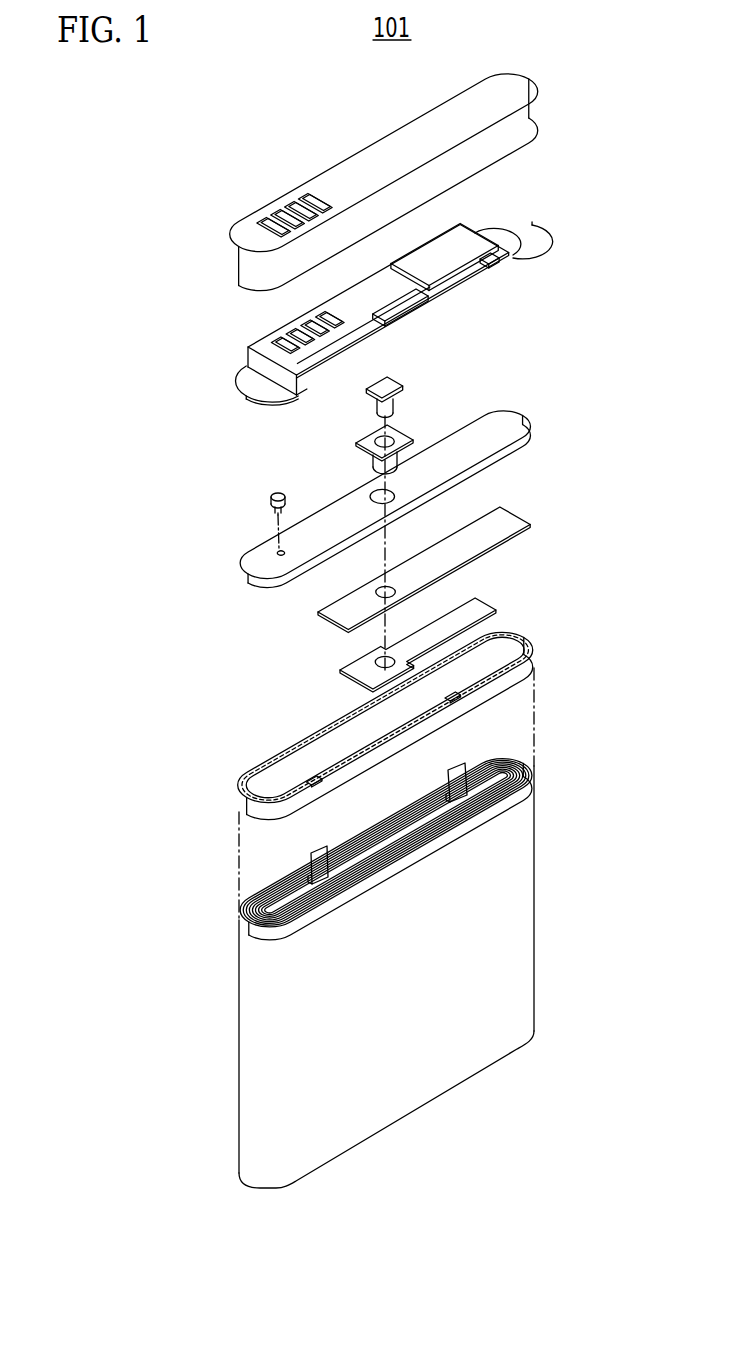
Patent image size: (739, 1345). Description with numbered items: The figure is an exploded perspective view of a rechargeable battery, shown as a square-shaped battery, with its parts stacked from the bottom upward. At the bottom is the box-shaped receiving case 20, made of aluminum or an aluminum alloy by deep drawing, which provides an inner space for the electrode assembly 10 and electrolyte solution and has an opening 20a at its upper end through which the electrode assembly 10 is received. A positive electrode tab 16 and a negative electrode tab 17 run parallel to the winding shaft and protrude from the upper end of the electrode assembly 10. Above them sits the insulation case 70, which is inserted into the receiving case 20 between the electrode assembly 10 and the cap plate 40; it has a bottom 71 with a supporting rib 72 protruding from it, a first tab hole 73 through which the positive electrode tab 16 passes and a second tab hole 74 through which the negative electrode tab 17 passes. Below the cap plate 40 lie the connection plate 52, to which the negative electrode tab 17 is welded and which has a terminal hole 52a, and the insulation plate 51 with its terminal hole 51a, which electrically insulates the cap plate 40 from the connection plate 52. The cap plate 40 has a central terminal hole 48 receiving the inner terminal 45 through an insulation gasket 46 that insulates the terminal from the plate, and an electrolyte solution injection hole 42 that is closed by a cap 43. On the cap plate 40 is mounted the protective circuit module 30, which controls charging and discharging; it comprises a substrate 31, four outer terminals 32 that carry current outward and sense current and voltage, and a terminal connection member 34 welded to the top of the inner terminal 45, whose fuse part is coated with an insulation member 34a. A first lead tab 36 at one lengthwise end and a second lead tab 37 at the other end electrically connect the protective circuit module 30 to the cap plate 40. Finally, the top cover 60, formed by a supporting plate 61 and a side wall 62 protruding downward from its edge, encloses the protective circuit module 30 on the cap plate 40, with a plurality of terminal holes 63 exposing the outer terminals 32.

The top cover 60 is at (552, 113).
The supporting plate 61 is at (351, 165).
The side wall 62 is at (238, 264).
The terminal holes 63 is at (273, 223).
The protective circuit module 30 is at (546, 213).
The substrate 31 is at (506, 263).
The outer terminals 32 is at (270, 333).
The terminal connection member 34 is at (492, 272).
The insulation member 34a is at (424, 308).
The first lead tab 36 is at (241, 389).
The second lead tab 37 is at (522, 243).
The cap plate 40 is at (522, 421).
The electrolyte solution injection hole 42 is at (270, 553).
The cap 43 is at (271, 496).
The inner terminal 45 is at (398, 383).
The insulation gasket 46 is at (408, 428).
The terminal hole 48 is at (372, 498).
The insulation plate 51 is at (530, 523).
The terminal hole 51a is at (396, 592).
The connection plate 52 is at (495, 612).
The terminal hole 52a is at (373, 666).
The insulation case 70 is at (238, 770).
The bottom 71 is at (299, 778).
The supporting rib 72 is at (526, 646).
The first tab hole 73 is at (326, 787).
The second tab hole 74 is at (463, 698).
The electrode assembly 10 is at (545, 771).
The positive electrode tab 16 is at (311, 864).
The negative electrode tab 17 is at (453, 782).
The receiving case 20 is at (549, 1009).
The opening 20a is at (526, 802).